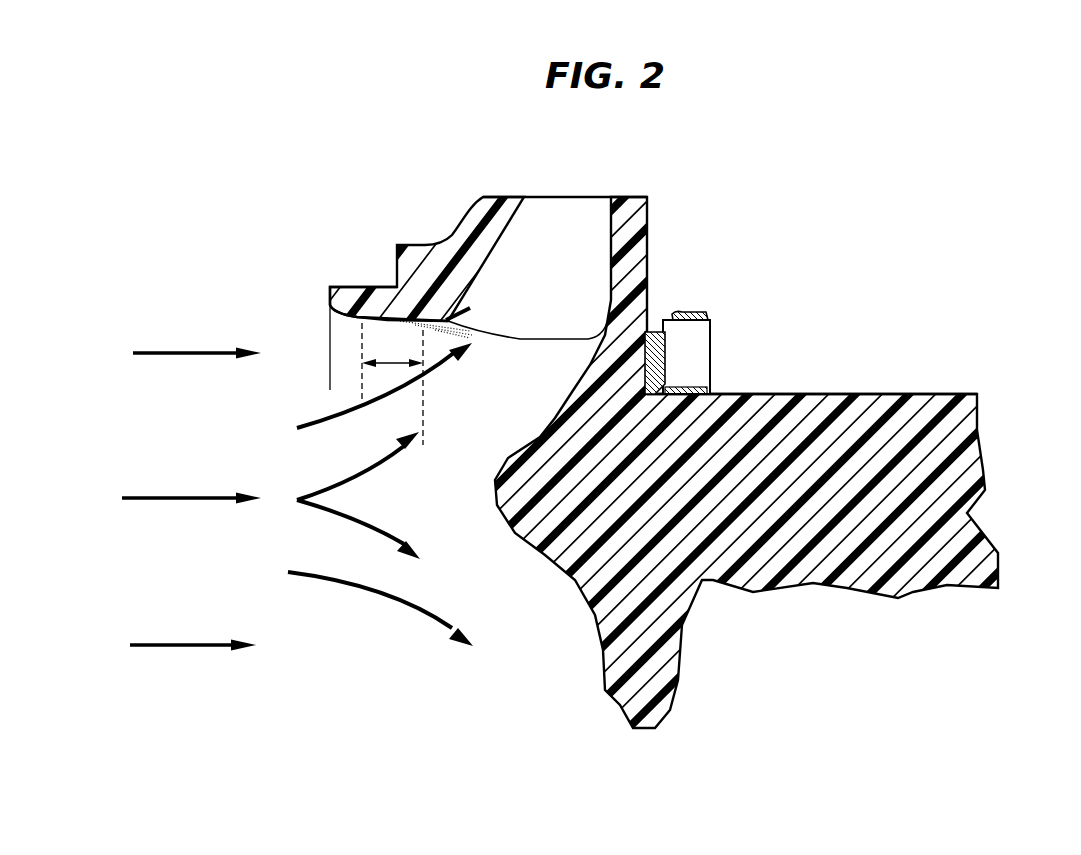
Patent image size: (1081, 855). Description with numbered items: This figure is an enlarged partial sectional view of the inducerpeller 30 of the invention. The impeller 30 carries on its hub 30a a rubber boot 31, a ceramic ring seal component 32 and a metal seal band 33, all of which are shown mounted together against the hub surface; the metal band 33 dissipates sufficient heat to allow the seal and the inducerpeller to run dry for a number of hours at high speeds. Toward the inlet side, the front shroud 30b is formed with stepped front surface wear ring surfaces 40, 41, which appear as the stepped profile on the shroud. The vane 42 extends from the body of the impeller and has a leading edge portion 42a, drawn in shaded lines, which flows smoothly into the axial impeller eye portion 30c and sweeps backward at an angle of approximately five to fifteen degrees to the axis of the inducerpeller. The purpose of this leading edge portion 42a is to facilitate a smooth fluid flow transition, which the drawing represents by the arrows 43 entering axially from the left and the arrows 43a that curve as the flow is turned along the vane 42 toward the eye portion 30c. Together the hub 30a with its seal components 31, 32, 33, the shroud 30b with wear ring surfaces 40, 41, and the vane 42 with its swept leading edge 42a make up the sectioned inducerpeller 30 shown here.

The inducerpeller 30 is at (648, 222).
The hub 30a is at (830, 393).
The front shroud 30b is at (513, 231).
The axial impeller eye portion 30c is at (397, 362).
The rubber boot 31 is at (648, 332).
The ceramic ring seal component 32 is at (712, 354).
The metal seal band 33 is at (705, 312).
The wear ring surface 40 is at (352, 286).
The wear ring surface 41 is at (410, 245).
The vane 42 is at (527, 373).
The leading edge portion 42a is at (470, 323).
The fluid flow arrows 43 is at (185, 645).
The fluid flow transition arrows 43a is at (350, 579).